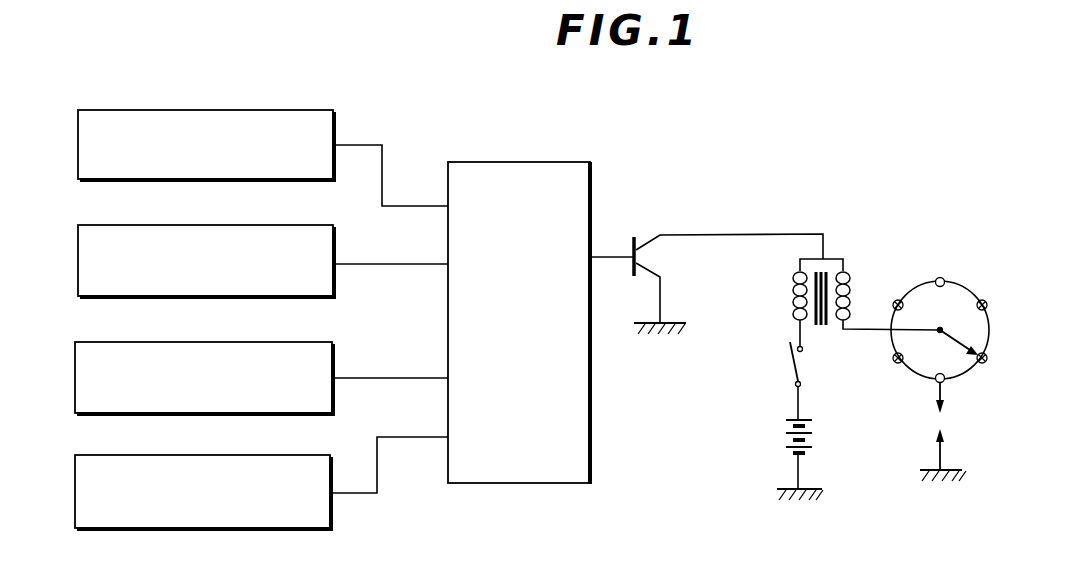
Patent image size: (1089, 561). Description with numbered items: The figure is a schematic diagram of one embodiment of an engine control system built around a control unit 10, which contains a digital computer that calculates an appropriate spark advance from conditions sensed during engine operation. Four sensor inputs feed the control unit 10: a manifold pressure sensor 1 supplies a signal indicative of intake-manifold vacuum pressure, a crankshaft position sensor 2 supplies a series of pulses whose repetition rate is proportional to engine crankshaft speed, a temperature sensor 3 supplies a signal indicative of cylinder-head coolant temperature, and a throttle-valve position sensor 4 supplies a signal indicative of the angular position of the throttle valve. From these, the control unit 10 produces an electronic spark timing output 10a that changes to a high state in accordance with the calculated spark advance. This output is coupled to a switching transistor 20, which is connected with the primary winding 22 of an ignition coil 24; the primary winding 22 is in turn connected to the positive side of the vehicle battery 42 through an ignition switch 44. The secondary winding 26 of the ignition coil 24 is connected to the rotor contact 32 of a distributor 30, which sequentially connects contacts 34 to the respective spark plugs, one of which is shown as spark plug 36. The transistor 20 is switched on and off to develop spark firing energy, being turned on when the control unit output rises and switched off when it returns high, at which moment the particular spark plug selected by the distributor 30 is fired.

The manifold pressure sensor 1 is at (338, 121).
The crankshaft position sensor 2 is at (335, 249).
The temperature sensor 3 is at (334, 354).
The throttle-valve position sensor 4 is at (333, 467).
The control unit 10 is at (511, 162).
The electronic spark timing output 10a is at (612, 259).
The switching transistor 20 is at (648, 229).
The primary winding 22 is at (794, 293).
The ignition coil 24 is at (822, 330).
The secondary winding 26 is at (847, 285).
The distributor 30 is at (1005, 325).
The rotor contact 32 is at (951, 343).
The contacts 34 is at (947, 281).
The spark plug 36 is at (943, 422).
The vehicle battery 42 is at (783, 440).
The ignition switch 44 is at (792, 366).